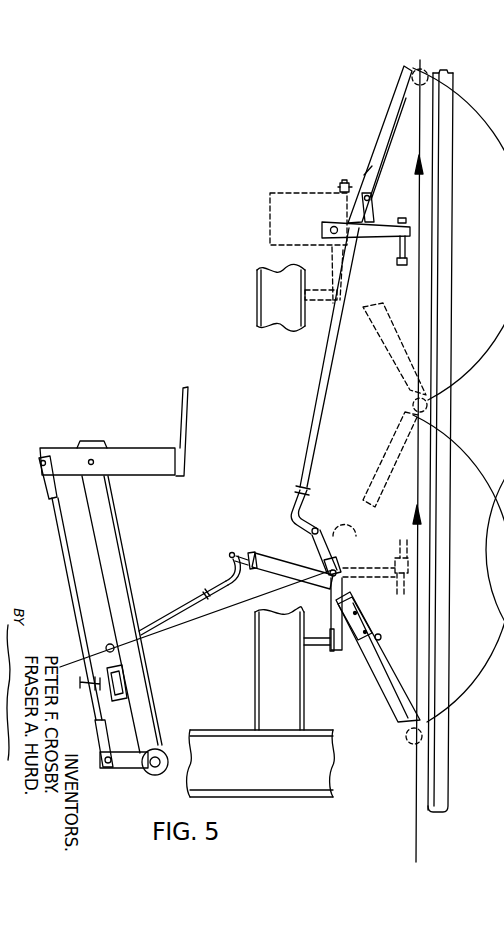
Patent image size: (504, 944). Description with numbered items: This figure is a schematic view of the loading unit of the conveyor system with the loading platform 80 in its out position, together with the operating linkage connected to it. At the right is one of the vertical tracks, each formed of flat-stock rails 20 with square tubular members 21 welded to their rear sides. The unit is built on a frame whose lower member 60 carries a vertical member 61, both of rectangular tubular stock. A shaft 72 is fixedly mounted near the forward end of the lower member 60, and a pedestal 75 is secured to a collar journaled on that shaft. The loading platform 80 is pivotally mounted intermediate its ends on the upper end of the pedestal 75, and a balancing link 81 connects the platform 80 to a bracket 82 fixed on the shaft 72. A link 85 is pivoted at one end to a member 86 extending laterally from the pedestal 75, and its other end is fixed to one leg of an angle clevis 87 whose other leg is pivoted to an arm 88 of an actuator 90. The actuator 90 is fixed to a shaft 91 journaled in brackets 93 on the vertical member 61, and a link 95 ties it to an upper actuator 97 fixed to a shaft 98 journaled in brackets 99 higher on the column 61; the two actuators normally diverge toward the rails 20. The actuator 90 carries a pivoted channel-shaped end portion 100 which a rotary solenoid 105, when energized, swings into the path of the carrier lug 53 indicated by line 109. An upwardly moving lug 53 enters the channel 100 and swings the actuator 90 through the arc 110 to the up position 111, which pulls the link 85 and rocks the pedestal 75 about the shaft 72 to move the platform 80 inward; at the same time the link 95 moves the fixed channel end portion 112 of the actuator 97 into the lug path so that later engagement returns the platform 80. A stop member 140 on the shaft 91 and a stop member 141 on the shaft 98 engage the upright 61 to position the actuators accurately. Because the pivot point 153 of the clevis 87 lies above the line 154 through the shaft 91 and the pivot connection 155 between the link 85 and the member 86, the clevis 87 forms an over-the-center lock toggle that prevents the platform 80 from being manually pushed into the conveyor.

The rails 20 is at (436, 142).
The square tubular members 21 is at (451, 183).
The carrier lug 53 is at (407, 405).
The lower member 60 is at (295, 771).
The vertical member 61 is at (287, 307).
The shaft 72 is at (168, 762).
The pedestal 75 is at (112, 531).
The loading platform 80 is at (138, 447).
The balancing link 81 is at (60, 535).
The bracket 82 is at (127, 760).
The link 85 is at (180, 610).
The member 86 is at (115, 703).
The angle clevis 87 is at (225, 582).
The arm 88 is at (255, 551).
The actuator 90 is at (362, 597).
The shaft 91 is at (343, 568).
The brackets 93 is at (355, 536).
The link 95 is at (322, 412).
The actuator 97 is at (348, 200).
The shaft 98 is at (330, 230).
The brackets 99 is at (270, 213).
The end portion 100 is at (392, 690).
The rotary solenoid 105 is at (381, 636).
The line 109 is at (417, 527).
The arc 110 is at (468, 694).
The up position 111 is at (390, 438).
The fixed channel end portion 112 is at (378, 122).
The stop member 140 is at (331, 600).
The stop member 141 is at (378, 227).
The pivot point 153 is at (228, 556).
The line 154 is at (188, 628).
The pivot connection 155 is at (109, 645).